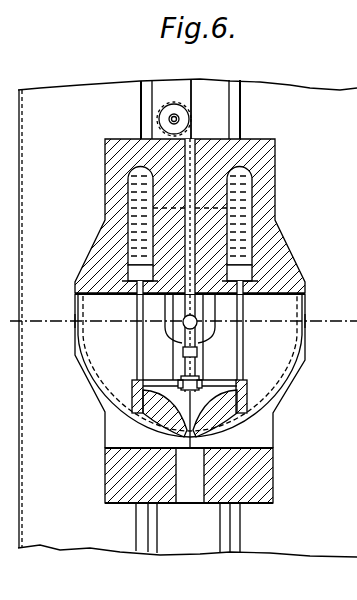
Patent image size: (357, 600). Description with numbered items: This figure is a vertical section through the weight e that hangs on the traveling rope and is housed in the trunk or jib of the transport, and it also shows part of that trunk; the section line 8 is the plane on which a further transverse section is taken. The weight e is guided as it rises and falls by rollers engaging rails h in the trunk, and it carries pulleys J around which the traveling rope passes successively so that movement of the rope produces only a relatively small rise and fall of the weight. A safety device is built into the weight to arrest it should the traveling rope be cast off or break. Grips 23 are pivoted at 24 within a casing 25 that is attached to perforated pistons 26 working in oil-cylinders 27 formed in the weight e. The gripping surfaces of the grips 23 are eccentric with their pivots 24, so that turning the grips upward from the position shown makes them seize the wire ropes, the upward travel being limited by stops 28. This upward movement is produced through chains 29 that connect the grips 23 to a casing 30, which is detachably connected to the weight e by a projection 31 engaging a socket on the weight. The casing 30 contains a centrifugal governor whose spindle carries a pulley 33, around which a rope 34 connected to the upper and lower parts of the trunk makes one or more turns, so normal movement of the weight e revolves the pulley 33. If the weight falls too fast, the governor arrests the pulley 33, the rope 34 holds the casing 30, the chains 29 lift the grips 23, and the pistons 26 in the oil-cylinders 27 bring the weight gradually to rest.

The rails h is at (238, 107).
The section line 8 8 is at (183, 313).
The projection 31 is at (150, 141).
The oil-cylinders 27 is at (125, 200).
The perforated pistons 26 is at (127, 270).
The casing 30 is at (197, 130).
The pulley 33 is at (189, 124).
The weight e is at (273, 443).
The pulleys on the weight J is at (285, 377).
The chains 29 is at (183, 352).
The stops 28 is at (197, 380).
The pivots 24 is at (138, 380).
The grips 23 is at (133, 397).
The casing 25 is at (234, 418).
The rope 34 is at (185, 534).